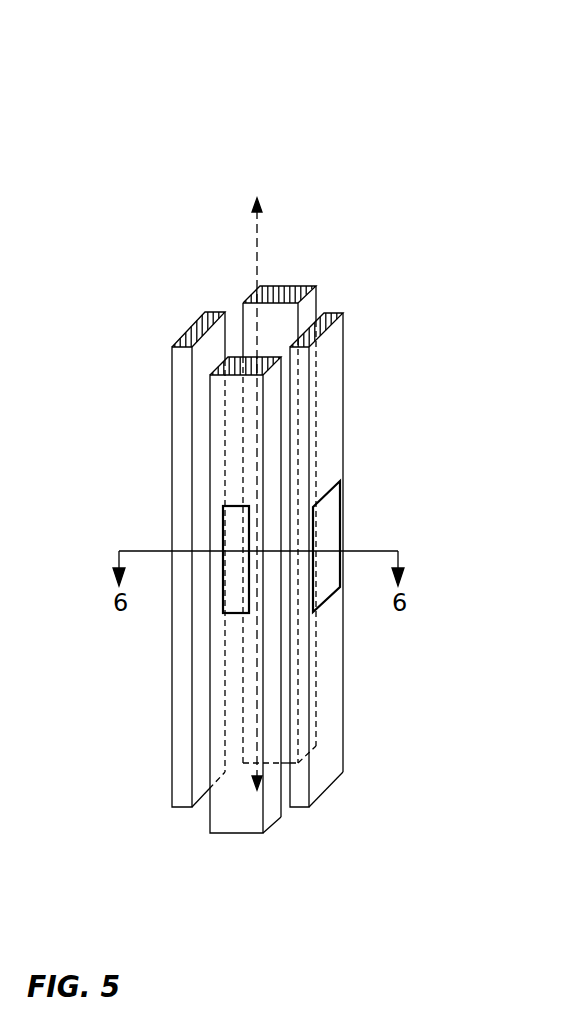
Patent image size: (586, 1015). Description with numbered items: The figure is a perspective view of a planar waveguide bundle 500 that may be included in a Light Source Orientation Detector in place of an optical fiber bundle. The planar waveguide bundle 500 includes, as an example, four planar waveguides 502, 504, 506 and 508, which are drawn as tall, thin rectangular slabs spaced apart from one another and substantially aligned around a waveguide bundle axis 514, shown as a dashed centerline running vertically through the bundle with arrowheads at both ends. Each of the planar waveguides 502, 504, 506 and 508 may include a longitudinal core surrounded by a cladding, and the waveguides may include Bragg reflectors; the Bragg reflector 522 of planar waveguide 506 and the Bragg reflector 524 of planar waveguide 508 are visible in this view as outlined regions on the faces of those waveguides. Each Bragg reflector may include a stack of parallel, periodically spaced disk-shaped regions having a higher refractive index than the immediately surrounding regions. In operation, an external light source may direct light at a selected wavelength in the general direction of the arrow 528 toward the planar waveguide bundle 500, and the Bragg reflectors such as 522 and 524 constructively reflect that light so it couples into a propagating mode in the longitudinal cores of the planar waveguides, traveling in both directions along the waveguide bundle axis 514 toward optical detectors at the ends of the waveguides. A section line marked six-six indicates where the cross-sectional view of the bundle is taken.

The planar waveguide bundle 500 is at (292, 213).
The planar waveguide 502 is at (278, 293).
The planar waveguide 504 is at (203, 315).
The planar waveguide 506 is at (343, 313).
The planar waveguide 508 is at (263, 371).
The waveguide bundle axis 514 is at (257, 245).
The Bragg reflector 522 is at (325, 493).
The Bragg reflector 524 is at (236, 505).
The arrow 528 is at (237, 568).